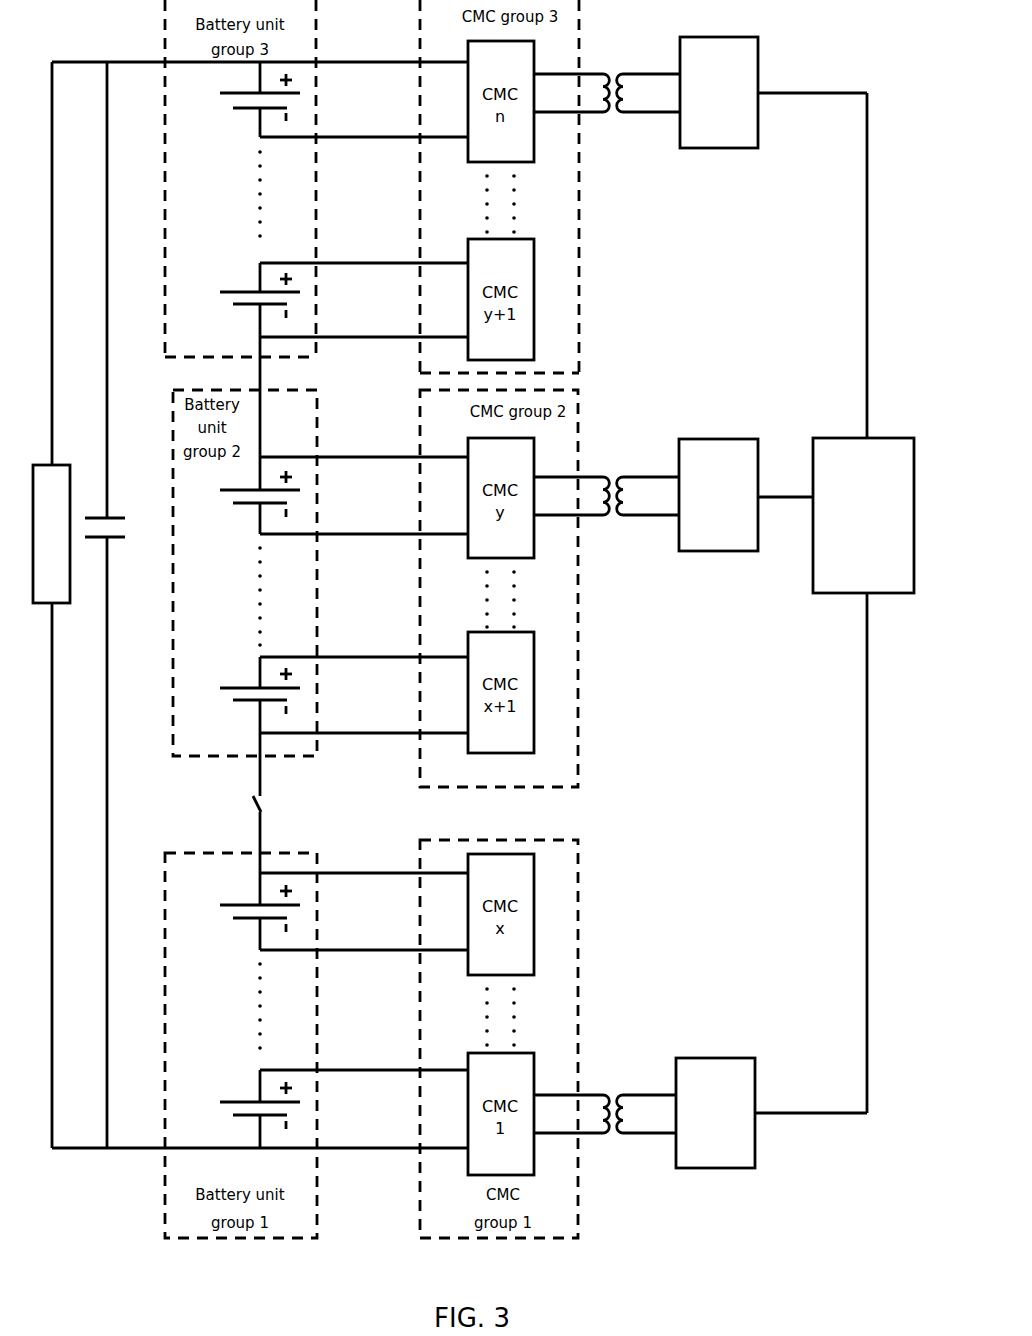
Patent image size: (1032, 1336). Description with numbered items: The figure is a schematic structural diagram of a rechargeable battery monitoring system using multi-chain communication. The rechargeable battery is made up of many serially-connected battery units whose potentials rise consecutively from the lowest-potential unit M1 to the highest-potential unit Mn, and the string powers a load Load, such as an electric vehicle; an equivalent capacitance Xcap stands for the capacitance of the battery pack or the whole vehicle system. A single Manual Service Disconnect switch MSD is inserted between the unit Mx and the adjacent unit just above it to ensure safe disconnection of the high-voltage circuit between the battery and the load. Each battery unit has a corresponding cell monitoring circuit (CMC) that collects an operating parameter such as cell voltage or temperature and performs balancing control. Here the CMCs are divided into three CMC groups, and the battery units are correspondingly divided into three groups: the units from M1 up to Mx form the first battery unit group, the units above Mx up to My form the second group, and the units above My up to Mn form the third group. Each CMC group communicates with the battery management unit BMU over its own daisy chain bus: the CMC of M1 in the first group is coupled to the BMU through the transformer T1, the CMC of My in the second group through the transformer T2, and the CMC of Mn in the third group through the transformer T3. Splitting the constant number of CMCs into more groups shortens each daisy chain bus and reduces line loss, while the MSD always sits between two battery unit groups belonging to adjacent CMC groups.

The load Load is at (51, 534).
The equivalent capacitance Xcap is at (126, 536).
The Manual Service Disconnect switch MSD is at (284, 805).
The highest-potential battery unit Mn is at (329, 99).
The battery unit My is at (326, 495).
The battery unit Mx is at (326, 911).
The lowest-potential battery unit M1 is at (324, 1109).
The transformer T3 is at (700, 92).
The transformer T2 is at (673, 495).
The transformer T1 is at (700, 1113).
The battery management unit BMU is at (863, 603).